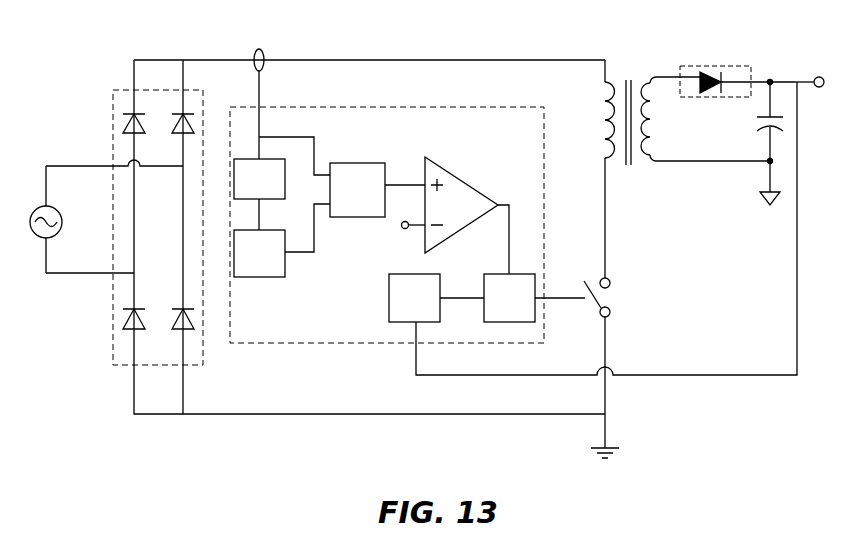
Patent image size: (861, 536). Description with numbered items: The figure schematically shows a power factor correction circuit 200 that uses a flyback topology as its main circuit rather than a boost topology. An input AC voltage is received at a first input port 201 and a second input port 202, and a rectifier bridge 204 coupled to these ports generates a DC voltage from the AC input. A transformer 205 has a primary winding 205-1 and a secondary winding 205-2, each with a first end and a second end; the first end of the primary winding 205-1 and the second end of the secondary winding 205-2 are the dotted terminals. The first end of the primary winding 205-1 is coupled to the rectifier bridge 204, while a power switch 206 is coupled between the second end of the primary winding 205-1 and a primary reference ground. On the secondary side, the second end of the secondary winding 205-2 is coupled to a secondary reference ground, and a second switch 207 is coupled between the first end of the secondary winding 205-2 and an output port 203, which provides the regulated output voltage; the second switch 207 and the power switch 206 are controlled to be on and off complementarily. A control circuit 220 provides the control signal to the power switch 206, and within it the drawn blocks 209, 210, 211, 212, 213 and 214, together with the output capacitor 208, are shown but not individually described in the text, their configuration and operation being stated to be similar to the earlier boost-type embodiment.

The power factor correction circuit 200 is at (78, 52).
The first input port 201 is at (111, 157).
The second input port 202 is at (86, 286).
The output port 203 is at (797, 66).
The rectifier bridge 204 is at (114, 370).
The transformer 205 is at (660, 112).
The primary winding 205-1 is at (582, 120).
The secondary winding 205-2 is at (705, 120).
The power switch 206 is at (617, 297).
The second switch 207 is at (720, 65).
The output capacitor 208 is at (750, 143).
The line voltage sensing block 209 is at (261, 195).
The peak voltage / clamp block 210 is at (282, 241).
The peak current reference block 211 is at (377, 189).
The comparator 212 is at (450, 215).
The switch driver block 213 is at (534, 298).
The feedback block 214 is at (593, 228).
The control circuit 220 is at (387, 207).